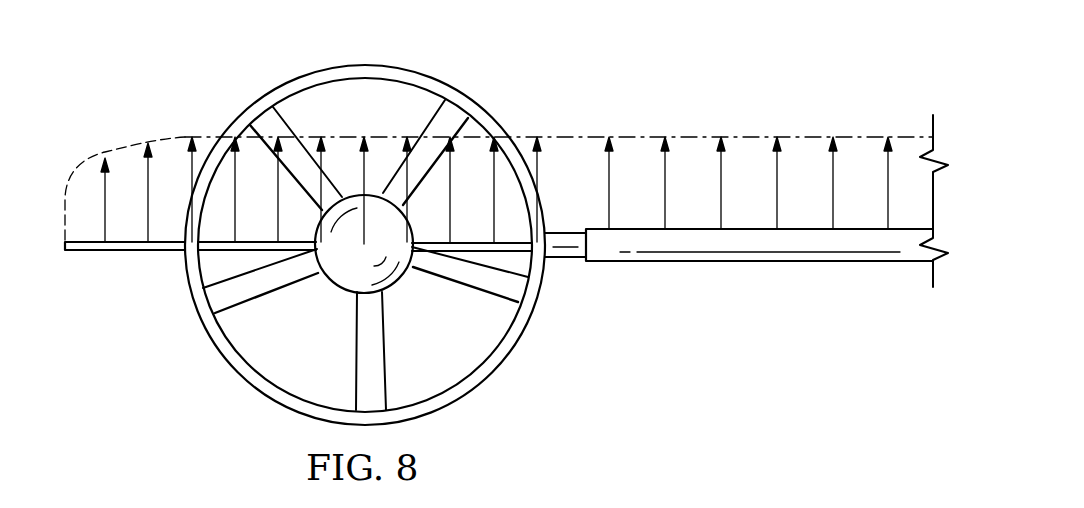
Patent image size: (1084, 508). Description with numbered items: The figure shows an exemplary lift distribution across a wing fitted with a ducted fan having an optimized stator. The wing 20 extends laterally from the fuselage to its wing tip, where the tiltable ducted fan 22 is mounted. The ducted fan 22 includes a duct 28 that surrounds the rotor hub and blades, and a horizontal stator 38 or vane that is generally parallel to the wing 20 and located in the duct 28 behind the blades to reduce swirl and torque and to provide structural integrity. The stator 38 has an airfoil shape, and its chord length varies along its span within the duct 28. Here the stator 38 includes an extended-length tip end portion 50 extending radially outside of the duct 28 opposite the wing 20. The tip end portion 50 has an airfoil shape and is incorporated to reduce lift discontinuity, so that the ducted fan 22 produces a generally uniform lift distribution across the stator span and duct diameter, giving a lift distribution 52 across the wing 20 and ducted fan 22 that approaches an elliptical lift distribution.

The wing 20 is at (781, 263).
The ducted fan 22 is at (204, 72).
The duct 28 is at (406, 66).
The stator 38 is at (251, 253).
The tip end portion 50 is at (82, 252).
The lift distribution 52 is at (597, 136).